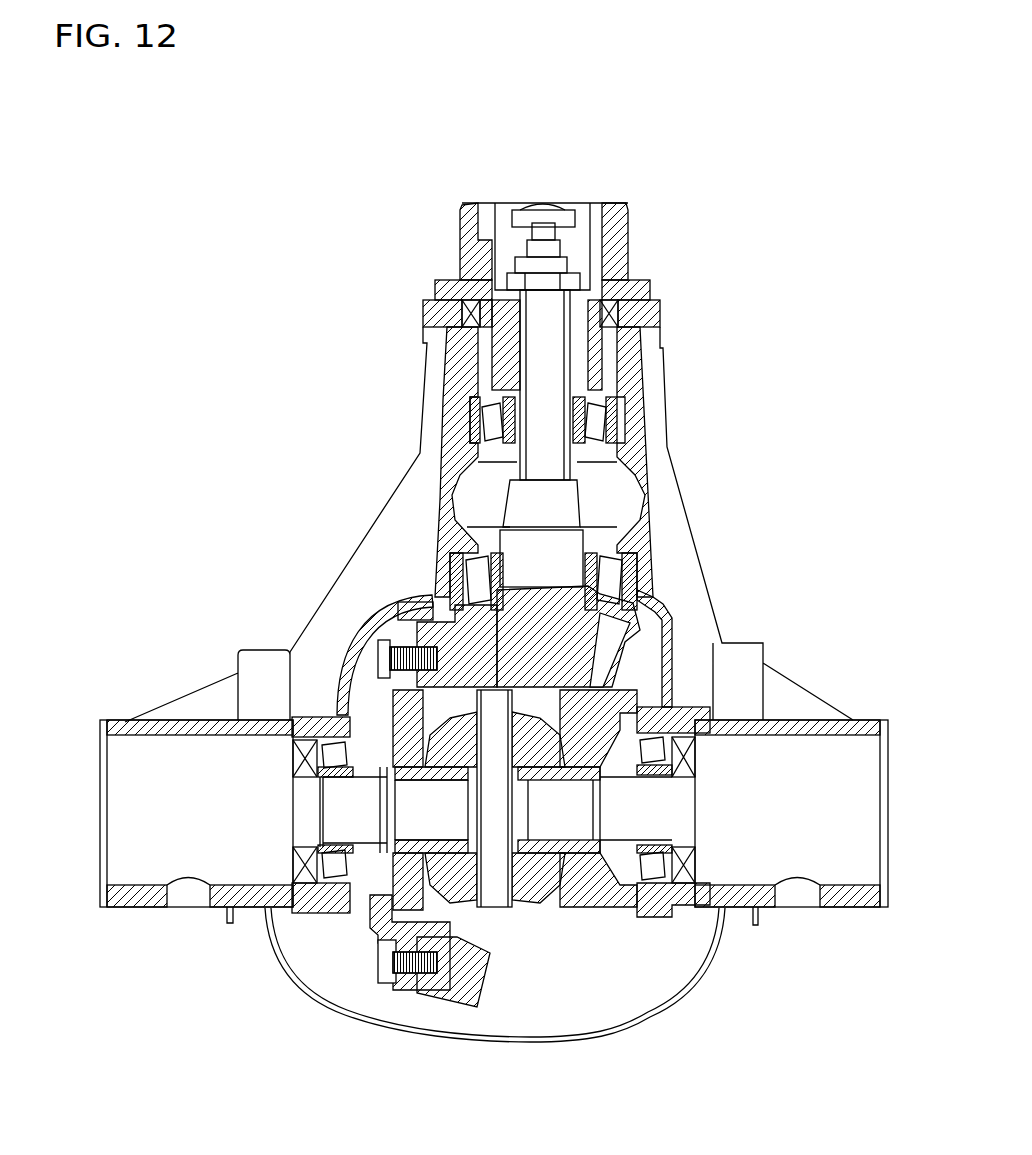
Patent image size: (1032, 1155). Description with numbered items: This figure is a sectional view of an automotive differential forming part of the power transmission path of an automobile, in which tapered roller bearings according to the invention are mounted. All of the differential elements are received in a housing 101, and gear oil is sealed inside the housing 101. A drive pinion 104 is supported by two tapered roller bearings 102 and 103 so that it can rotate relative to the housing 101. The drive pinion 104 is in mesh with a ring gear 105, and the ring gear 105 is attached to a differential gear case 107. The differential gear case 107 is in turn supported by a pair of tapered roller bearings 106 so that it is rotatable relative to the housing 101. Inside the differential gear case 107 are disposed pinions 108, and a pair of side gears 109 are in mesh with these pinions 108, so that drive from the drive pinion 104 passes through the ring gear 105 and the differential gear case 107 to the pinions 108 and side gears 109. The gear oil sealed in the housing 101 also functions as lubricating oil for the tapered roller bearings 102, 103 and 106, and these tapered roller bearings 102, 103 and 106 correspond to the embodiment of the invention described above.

The housing 101 is at (340, 640).
The tapered roller bearing 102 is at (620, 400).
The tapered roller bearing 103 is at (650, 543).
The drive pinion 104 is at (613, 627).
The ring gear 105 is at (435, 625).
The tapered roller bearings 106 is at (663, 903).
The differential gear case 107 is at (367, 770).
The pinions 108 is at (452, 778).
The side gears 109 is at (455, 880).